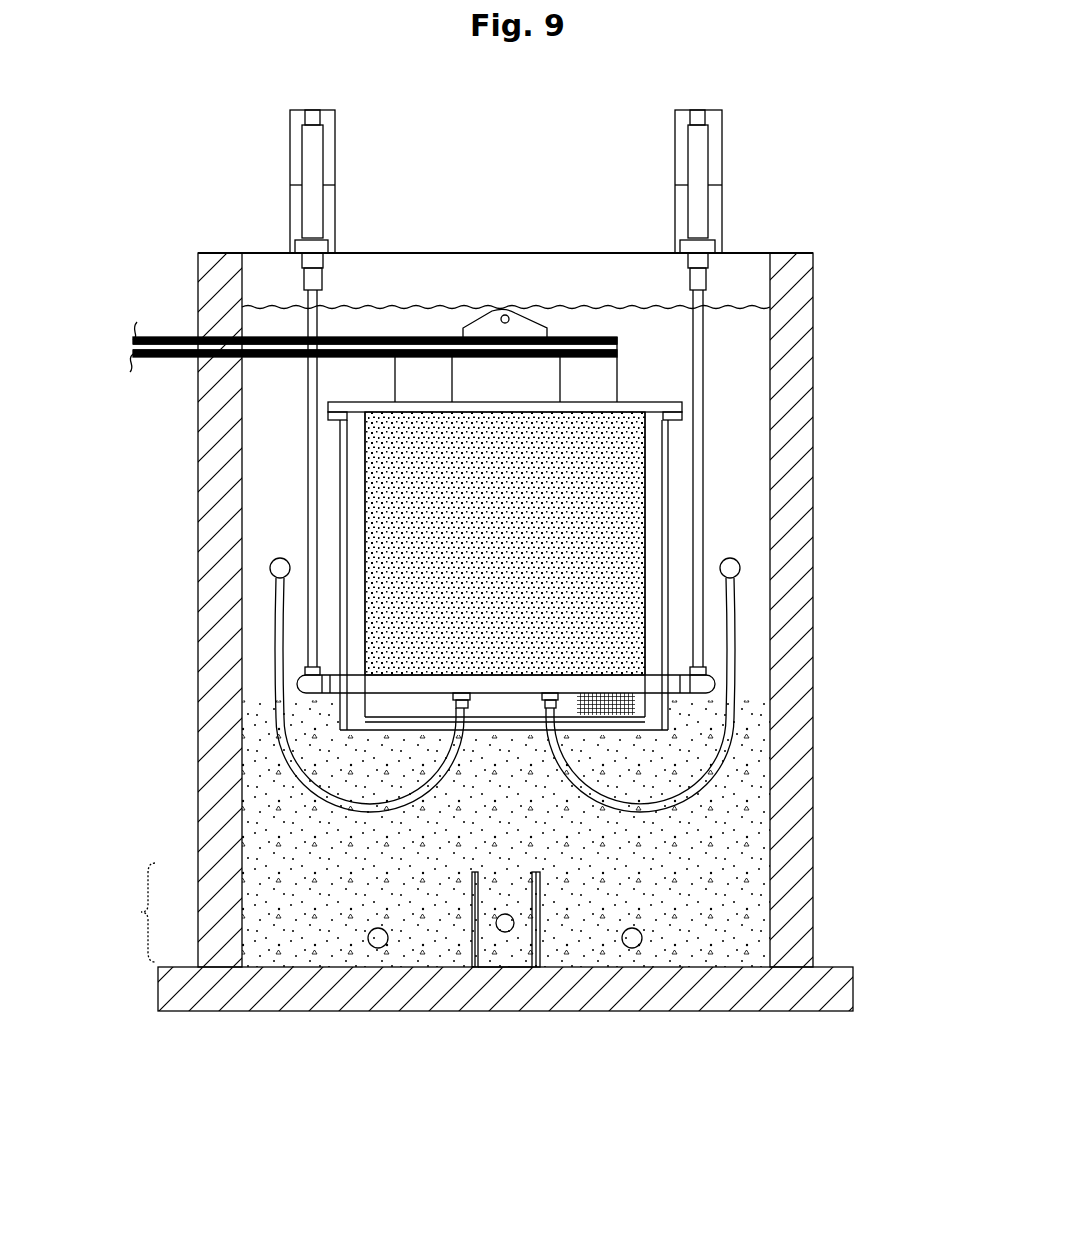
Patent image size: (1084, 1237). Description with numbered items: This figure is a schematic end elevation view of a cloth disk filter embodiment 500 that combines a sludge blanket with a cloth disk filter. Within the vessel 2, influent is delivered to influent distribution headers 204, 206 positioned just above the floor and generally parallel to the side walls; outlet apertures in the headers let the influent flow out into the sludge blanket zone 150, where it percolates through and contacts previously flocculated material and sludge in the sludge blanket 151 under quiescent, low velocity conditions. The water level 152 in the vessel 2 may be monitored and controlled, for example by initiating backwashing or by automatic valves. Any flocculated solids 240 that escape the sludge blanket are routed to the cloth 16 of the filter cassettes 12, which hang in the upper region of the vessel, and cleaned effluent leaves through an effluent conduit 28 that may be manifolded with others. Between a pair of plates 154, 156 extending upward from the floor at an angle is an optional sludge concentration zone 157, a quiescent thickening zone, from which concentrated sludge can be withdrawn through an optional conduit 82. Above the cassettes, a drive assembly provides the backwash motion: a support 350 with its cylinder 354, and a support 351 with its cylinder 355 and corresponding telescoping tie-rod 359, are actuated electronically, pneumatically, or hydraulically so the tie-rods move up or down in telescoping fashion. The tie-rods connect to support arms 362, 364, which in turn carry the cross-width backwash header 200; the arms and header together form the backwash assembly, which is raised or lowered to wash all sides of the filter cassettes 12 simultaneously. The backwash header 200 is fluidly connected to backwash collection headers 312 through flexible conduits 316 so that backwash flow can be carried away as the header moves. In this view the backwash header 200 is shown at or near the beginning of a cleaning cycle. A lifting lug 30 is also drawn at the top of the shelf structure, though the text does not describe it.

The cloth disk filter embodiment 500 is at (182, 102).
The vessel 2 is at (812, 431).
The filter cassettes 12 is at (605, 452).
The cloth 16 is at (365, 541).
The effluent conduits 28 is at (181, 336).
The lifting bracket 30 is at (547, 312).
The conduit 82 is at (509, 932).
The sludge blanket zone 150 is at (141, 912).
The sludge blanket 151 is at (286, 950).
The water level 152 is at (736, 305).
The plate 154 is at (450, 955).
The plate 156 is at (535, 950).
The sludge concentration zone 157 is at (485, 870).
The backwash header 200 is at (678, 697).
The influent distribution header 204 is at (378, 950).
The influent distribution header 206 is at (640, 948).
The flocculated solids 240 is at (725, 842).
The backwash collection header 312 is at (270, 565).
The flexible conduits 316 is at (277, 745).
The support 350 is at (675, 145).
The support 351 is at (335, 155).
The cylinder 354 is at (708, 160).
The cylinder 355 is at (302, 157).
The telescoping tie-rod 359 is at (308, 446).
The support arm 362 is at (715, 684).
The support arm 364 is at (297, 684).